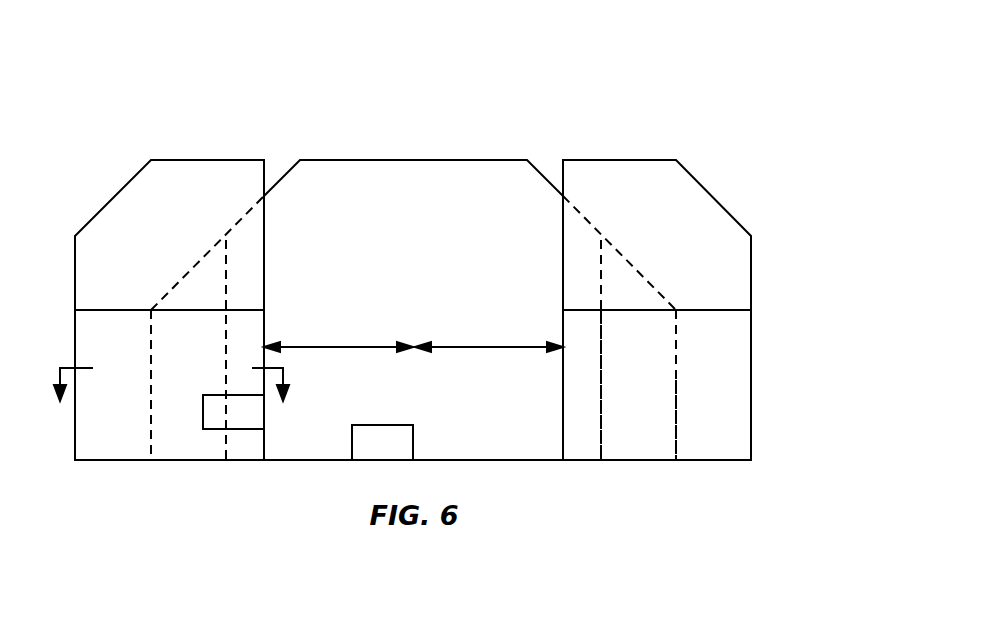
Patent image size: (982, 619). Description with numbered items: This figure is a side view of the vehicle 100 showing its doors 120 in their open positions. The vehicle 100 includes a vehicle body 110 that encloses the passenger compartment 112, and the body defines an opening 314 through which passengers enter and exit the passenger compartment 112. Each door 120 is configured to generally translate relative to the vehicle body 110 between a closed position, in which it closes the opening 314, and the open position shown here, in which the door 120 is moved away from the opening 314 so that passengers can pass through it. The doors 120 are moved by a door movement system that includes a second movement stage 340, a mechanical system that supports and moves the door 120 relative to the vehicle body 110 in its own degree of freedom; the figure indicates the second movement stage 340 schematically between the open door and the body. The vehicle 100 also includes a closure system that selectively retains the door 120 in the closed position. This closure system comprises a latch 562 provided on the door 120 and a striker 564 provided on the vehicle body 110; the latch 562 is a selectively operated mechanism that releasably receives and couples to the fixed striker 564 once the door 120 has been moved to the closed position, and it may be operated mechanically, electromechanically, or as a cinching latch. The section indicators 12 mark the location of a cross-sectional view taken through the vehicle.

The vehicle 100 is at (433, 237).
The passenger compartment 112 is at (433, 200).
The door 120 is at (692, 173).
The opening 314 is at (602, 355).
The vehicle body 110 is at (677, 397).
The second movement stage 340 is at (328, 350).
The latch 562 is at (233, 412).
The striker 564 is at (382, 442).
The section line 12 is at (172, 401).